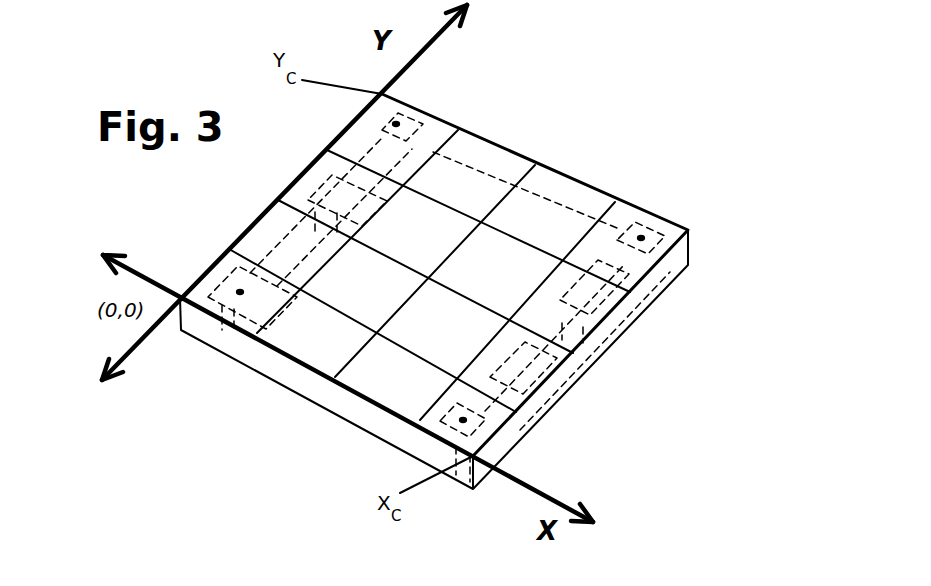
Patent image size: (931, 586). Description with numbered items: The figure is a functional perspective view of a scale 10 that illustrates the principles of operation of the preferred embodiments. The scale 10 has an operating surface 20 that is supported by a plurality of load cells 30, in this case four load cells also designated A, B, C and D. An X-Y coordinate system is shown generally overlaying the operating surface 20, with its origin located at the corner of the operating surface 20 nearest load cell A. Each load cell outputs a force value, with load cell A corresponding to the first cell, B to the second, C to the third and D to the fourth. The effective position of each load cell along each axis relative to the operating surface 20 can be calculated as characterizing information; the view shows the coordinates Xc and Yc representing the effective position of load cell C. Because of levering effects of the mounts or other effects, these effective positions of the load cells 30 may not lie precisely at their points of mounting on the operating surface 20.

The scale 10 is at (671, 366).
The operating surface 20 is at (565, 167).
The load cells 30 is at (424, 125).